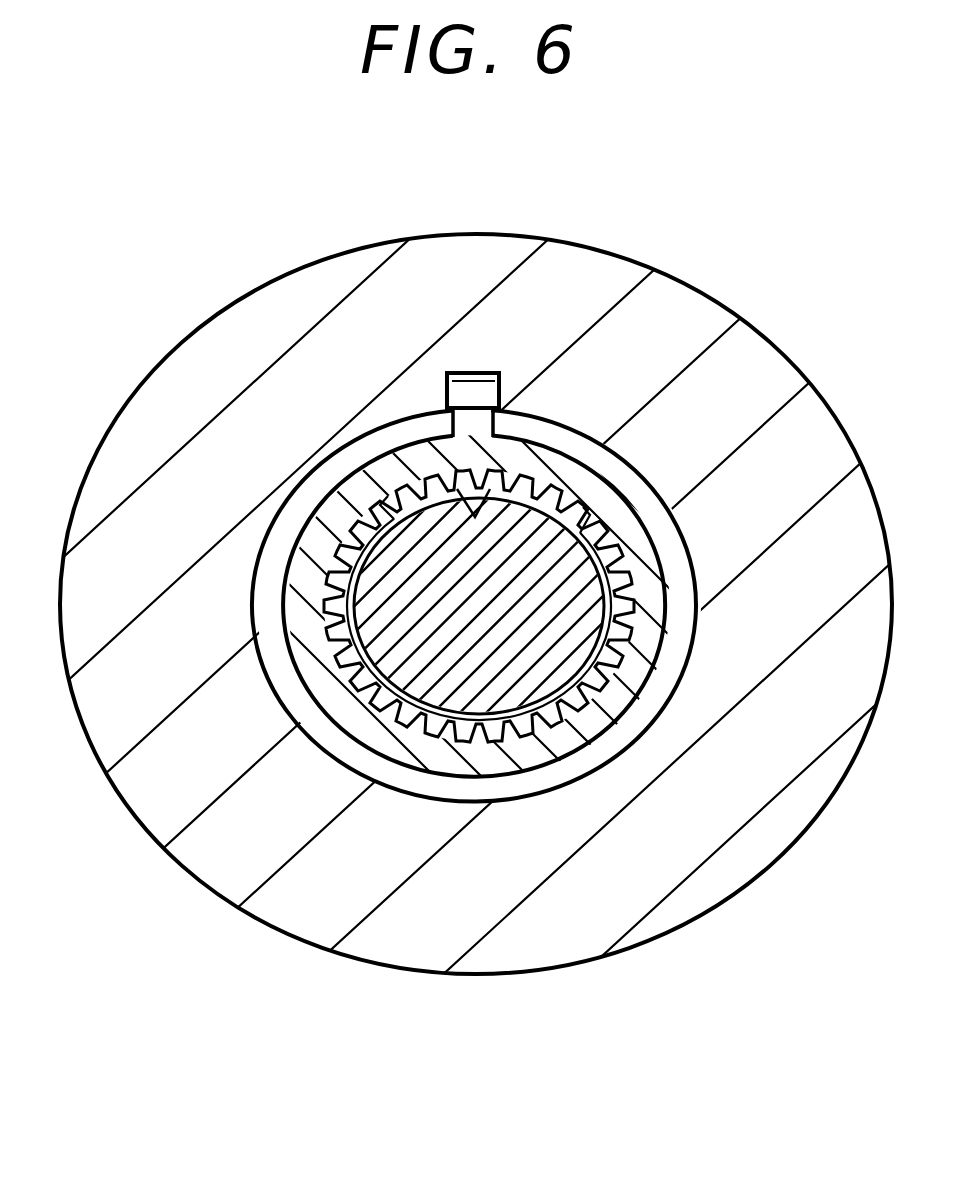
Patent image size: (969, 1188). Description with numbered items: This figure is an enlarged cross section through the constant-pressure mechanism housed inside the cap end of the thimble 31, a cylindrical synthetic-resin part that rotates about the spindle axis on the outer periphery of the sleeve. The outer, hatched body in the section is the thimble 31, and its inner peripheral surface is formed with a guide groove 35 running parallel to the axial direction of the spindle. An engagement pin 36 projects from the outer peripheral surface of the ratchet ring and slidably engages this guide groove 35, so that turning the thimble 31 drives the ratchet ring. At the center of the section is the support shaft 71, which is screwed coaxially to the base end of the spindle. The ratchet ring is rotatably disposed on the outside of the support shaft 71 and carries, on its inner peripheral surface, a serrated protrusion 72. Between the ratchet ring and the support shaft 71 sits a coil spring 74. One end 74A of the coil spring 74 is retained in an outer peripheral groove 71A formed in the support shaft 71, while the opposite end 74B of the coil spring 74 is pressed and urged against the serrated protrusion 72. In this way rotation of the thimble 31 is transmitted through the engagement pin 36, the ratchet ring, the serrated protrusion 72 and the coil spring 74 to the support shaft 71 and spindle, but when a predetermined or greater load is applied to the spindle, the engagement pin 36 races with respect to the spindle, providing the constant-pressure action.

The thimble 31 is at (768, 368).
The guide groove 35 is at (502, 388).
The engagement pin 36 is at (473, 380).
The support shaft 71 is at (567, 651).
The outer peripheral groove 71A is at (545, 490).
The serrated protrusion 72 is at (520, 735).
The coil spring 74 is at (385, 702).
The one end of the coil spring 74A is at (380, 503).
The opposite end of the coil spring 74B is at (593, 520).